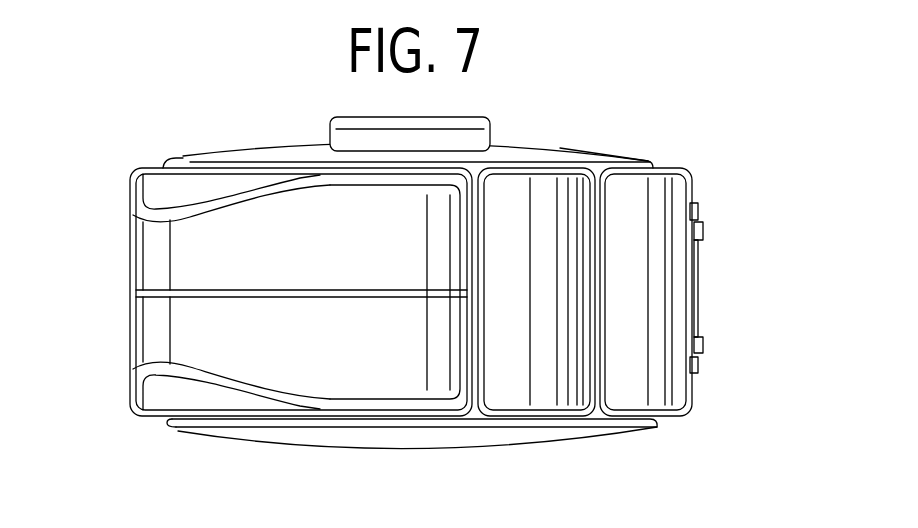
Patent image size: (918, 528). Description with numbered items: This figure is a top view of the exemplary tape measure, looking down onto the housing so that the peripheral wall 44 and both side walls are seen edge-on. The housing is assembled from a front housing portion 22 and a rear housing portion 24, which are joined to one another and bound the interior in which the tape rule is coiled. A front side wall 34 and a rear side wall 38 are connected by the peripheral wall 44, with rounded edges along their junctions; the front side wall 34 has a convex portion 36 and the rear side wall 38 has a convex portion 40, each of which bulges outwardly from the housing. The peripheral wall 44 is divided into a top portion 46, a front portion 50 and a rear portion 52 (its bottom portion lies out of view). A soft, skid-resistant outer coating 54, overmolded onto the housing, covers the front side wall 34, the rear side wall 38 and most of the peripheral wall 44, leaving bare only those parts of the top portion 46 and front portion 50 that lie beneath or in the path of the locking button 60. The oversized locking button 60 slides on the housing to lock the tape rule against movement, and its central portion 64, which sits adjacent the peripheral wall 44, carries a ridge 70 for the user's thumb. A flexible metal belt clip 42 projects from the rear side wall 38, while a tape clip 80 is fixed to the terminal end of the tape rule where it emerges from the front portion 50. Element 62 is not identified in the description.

The front housing portion 22 is at (160, 416).
The rear housing portion 24 is at (180, 162).
The front side wall 34 is at (182, 435).
The convex portion 36 is at (413, 455).
The rear side wall 38 is at (545, 141).
The convex portion 40 is at (582, 148).
The belt clip 42 is at (479, 118).
The peripheral wall 44 is at (153, 334).
The top portion 46 is at (291, 205).
The front portion 50 is at (693, 192).
The rear portion 52 is at (130, 377).
The outer coating 54 is at (153, 262).
The locking button 60 is at (677, 417).
The ribs 62 is at (667, 178).
The central portion 64 is at (657, 387).
The ridge 70 is at (597, 188).
The tape clip 80 is at (700, 363).